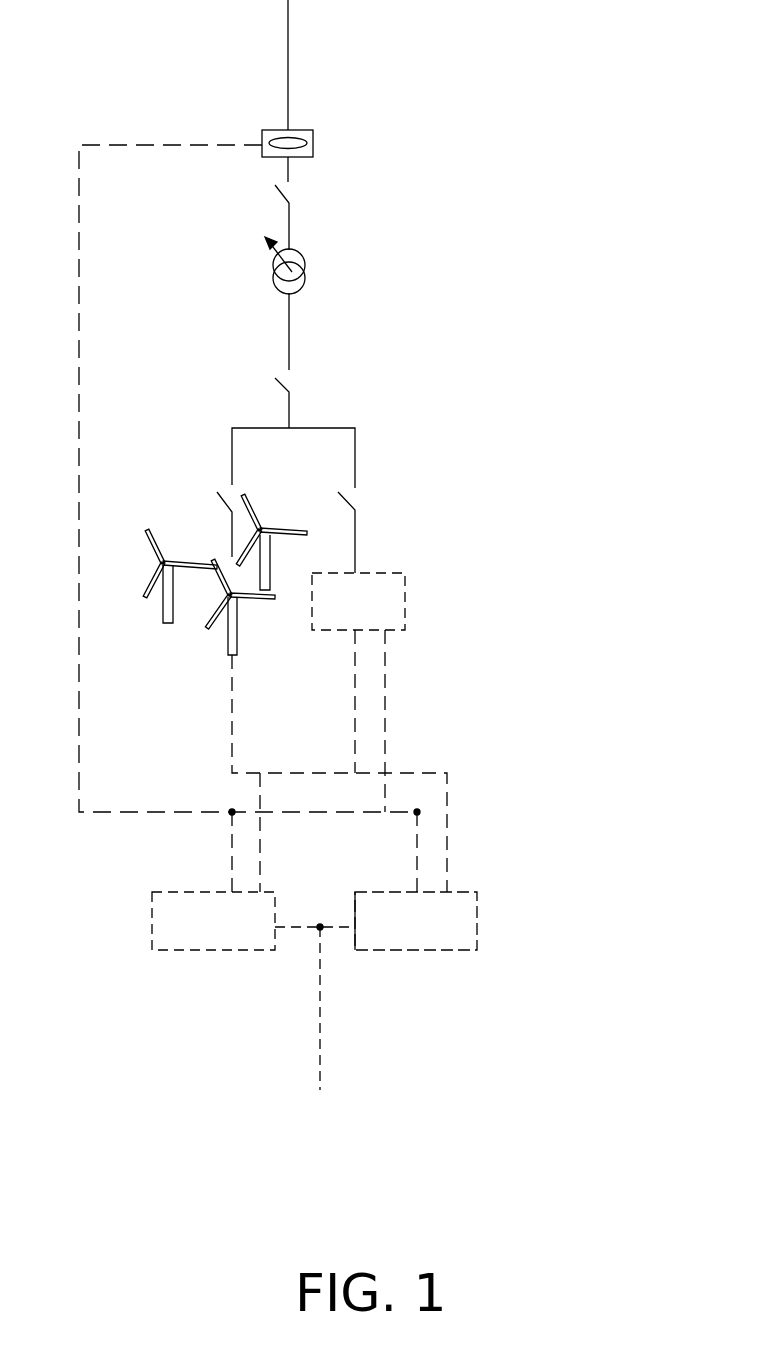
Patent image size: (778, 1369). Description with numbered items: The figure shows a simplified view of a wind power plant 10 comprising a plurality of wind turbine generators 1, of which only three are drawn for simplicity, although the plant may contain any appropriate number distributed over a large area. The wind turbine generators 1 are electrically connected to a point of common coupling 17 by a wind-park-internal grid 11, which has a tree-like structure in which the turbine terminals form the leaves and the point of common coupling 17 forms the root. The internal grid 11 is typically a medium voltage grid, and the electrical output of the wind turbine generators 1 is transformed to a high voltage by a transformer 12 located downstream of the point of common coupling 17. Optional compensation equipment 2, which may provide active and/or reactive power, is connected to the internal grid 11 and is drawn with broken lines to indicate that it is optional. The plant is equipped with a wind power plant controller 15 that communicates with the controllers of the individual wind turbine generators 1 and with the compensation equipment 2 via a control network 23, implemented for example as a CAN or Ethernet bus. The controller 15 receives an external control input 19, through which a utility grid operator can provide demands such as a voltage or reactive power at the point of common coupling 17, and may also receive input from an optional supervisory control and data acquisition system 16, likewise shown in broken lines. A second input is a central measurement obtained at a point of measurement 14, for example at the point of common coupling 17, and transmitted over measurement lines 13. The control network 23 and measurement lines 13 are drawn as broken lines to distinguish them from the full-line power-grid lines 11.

The wind power plant 10 is at (596, 835).
The point of common coupling 17 is at (338, 65).
The wind-park-internal grid 11 is at (300, 321).
The point of measurement 14 is at (307, 143).
The transformer 12 is at (309, 265).
The measurement lines 13 is at (232, 478).
The wind turbine generator 1 is at (225, 574).
The compensation equipment 2 is at (368, 601).
The control network 23 is at (340, 780).
The external control input 19 is at (324, 1025).
The supervisory control and data acquisition system 16 is at (213, 944).
The wind power plant controller 15 is at (416, 944).